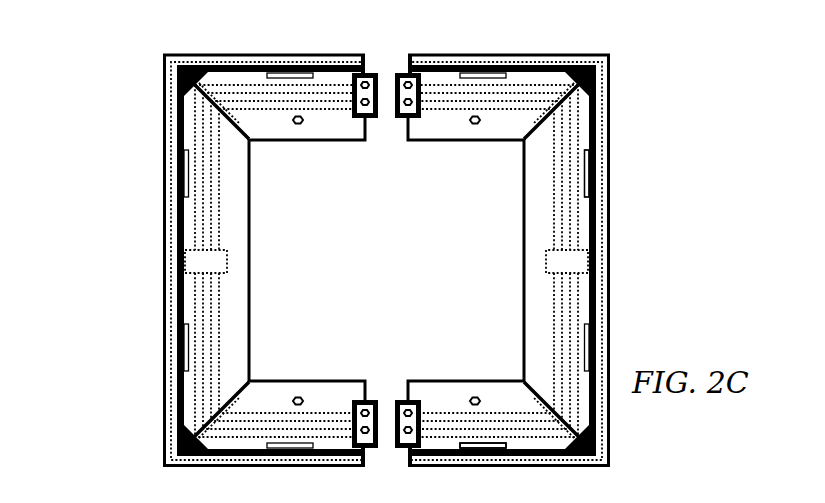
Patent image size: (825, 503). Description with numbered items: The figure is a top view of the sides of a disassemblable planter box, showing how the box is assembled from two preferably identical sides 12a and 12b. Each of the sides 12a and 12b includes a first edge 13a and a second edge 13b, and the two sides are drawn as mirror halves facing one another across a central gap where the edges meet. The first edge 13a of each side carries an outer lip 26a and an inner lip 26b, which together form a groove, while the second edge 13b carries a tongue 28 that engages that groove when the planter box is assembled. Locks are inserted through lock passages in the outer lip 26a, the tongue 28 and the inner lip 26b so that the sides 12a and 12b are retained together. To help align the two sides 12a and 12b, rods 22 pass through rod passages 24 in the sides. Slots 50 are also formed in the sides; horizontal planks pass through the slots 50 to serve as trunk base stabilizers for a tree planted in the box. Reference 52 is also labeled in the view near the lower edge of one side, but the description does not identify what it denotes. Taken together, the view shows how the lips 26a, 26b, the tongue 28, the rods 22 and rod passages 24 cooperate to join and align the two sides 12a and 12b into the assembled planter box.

The side 12a is at (583, 288).
The side 12b is at (193, 294).
The first edge 13a is at (401, 90).
The second edge 13b is at (372, 90).
The outer lip 26a is at (372, 450).
The inner lip 26b is at (366, 416).
The tongue 28 is at (410, 416).
The slot 50 is at (589, 174).
The bottom slot 52 is at (486, 473).
The rod 22 is at (172, 284).
The rod passage 24 is at (274, 478).